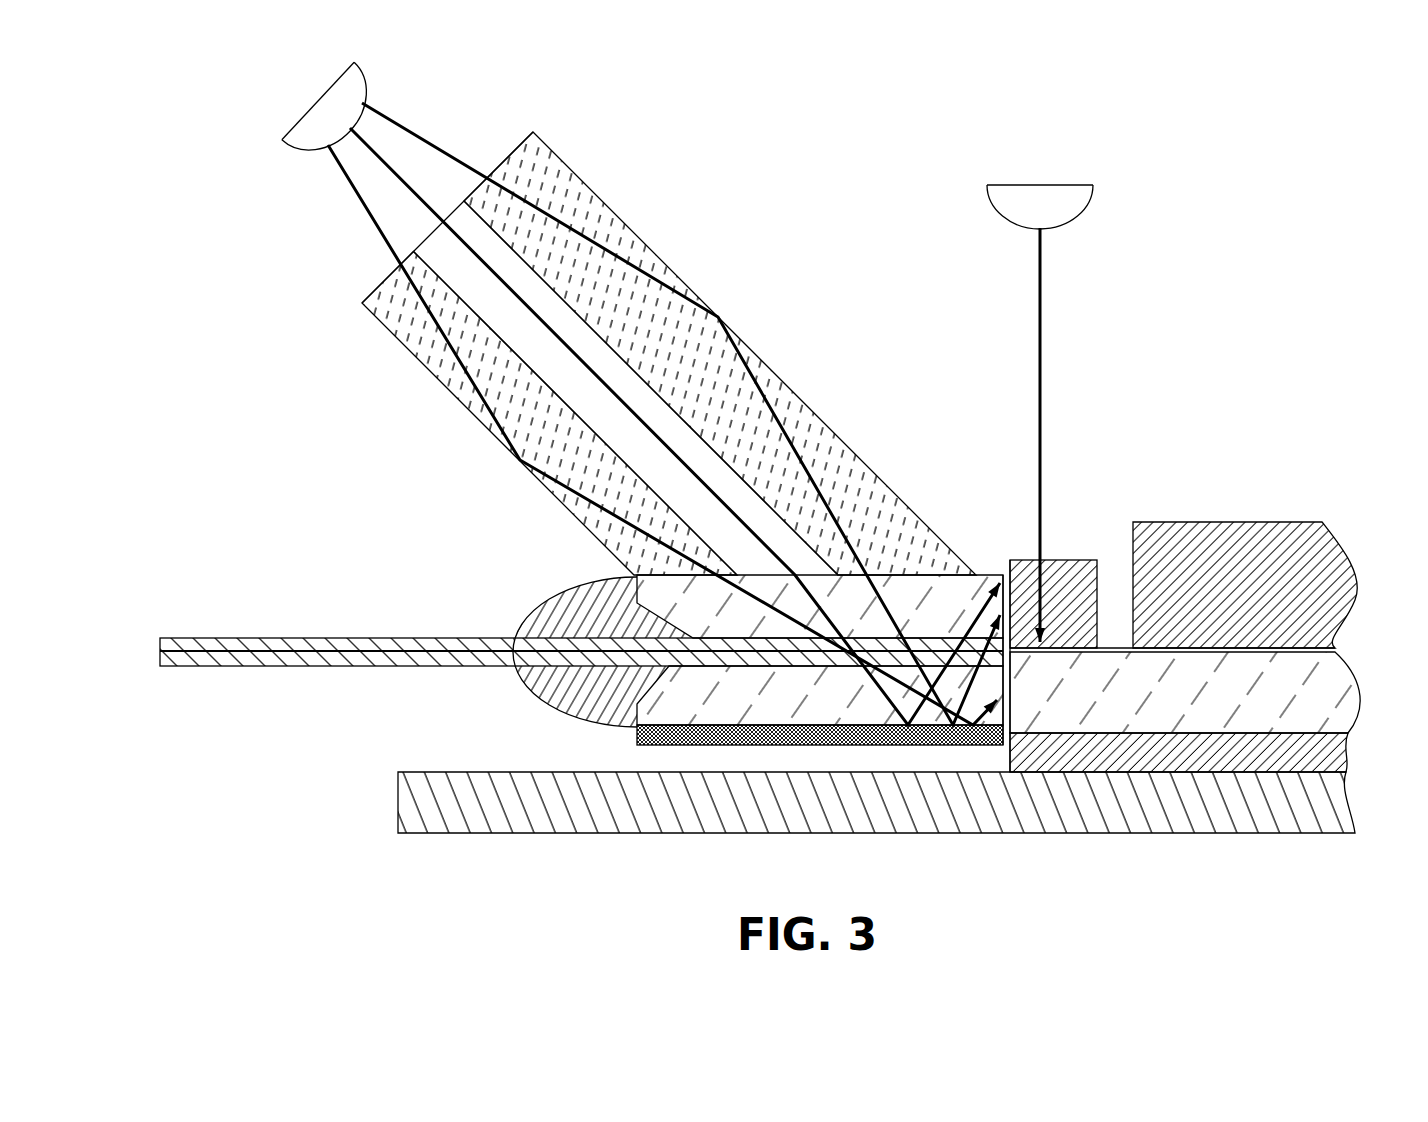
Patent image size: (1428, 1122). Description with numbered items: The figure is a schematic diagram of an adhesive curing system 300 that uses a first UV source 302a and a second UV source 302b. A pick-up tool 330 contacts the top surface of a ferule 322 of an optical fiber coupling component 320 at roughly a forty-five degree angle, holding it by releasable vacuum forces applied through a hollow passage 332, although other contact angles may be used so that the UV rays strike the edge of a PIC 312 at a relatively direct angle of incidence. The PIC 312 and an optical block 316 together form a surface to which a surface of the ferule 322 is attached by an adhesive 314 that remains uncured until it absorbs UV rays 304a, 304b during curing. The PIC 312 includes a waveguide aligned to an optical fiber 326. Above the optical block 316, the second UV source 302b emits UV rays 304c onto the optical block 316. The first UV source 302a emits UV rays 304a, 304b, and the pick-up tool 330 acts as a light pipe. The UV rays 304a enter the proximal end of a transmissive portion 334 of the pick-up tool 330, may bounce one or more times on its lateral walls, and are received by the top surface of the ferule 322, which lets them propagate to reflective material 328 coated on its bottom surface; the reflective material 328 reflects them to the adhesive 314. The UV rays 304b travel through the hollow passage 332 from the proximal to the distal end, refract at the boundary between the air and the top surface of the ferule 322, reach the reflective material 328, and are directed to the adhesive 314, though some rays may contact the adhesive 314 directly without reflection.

The adhesive curing system 300 is at (785, 473).
The first UV source 302a is at (300, 117).
The second UV source 302b is at (995, 210).
The UV rays 304a is at (370, 110).
The UV rays 304b is at (403, 182).
The UV rays 304c is at (1042, 277).
The PIC 312 is at (1355, 675).
The adhesive 314 is at (1007, 728).
The optical block 316 is at (1058, 560).
The optical fiber coupling component 320 is at (507, 643).
The ferule 322 is at (647, 608).
The optical fiber 326 is at (296, 667).
The reflective material 328 is at (715, 745).
The pick-up tool 330 is at (568, 306).
The hollow passage 332 is at (453, 212).
The transmissive portion 334 is at (598, 193).